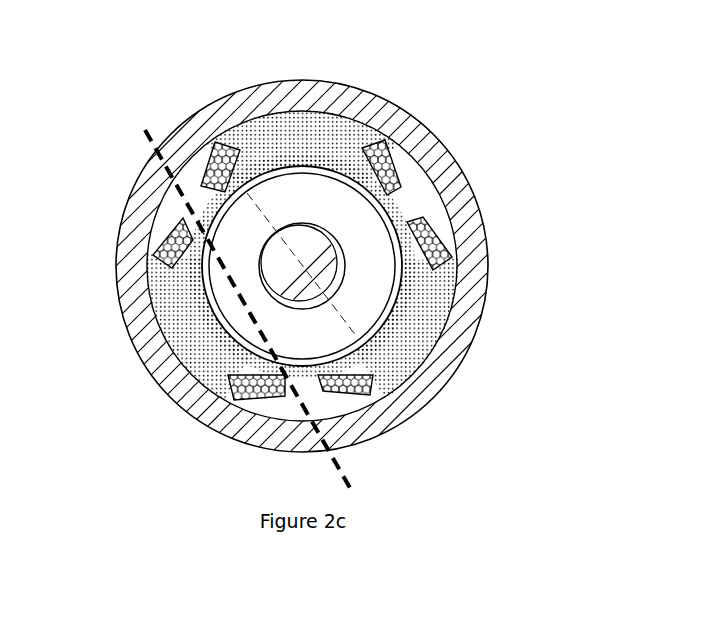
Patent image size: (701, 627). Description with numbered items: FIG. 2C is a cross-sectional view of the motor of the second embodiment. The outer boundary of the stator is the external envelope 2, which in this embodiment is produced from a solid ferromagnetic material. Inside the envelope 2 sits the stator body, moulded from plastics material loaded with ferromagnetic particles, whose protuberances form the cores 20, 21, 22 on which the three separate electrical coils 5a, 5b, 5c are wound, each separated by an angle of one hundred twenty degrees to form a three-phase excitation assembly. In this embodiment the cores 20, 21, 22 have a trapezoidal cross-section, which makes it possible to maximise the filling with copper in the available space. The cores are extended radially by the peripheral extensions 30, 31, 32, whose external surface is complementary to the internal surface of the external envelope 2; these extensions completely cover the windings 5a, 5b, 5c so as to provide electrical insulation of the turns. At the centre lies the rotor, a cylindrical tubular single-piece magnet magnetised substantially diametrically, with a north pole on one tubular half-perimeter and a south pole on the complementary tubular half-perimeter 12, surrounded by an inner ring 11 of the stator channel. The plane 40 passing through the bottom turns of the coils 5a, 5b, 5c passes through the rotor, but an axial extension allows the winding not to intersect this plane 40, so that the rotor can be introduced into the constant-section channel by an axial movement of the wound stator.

The external envelope 2 is at (304, 254).
The peripheral extension 30 is at (308, 110).
The peripheral extension 31 is at (432, 348).
The peripheral extension 32 is at (170, 343).
The core 20 is at (323, 157).
The core 21 is at (402, 315).
The core 22 is at (203, 305).
The electrical coil 5a is at (211, 176).
The electrical coil 5b is at (442, 256).
The electrical coil 5c is at (172, 234).
The inner tube 11 is at (243, 323).
The complementary tubular half-perimeter 12 is at (368, 294).
The plane 40 is at (264, 313).